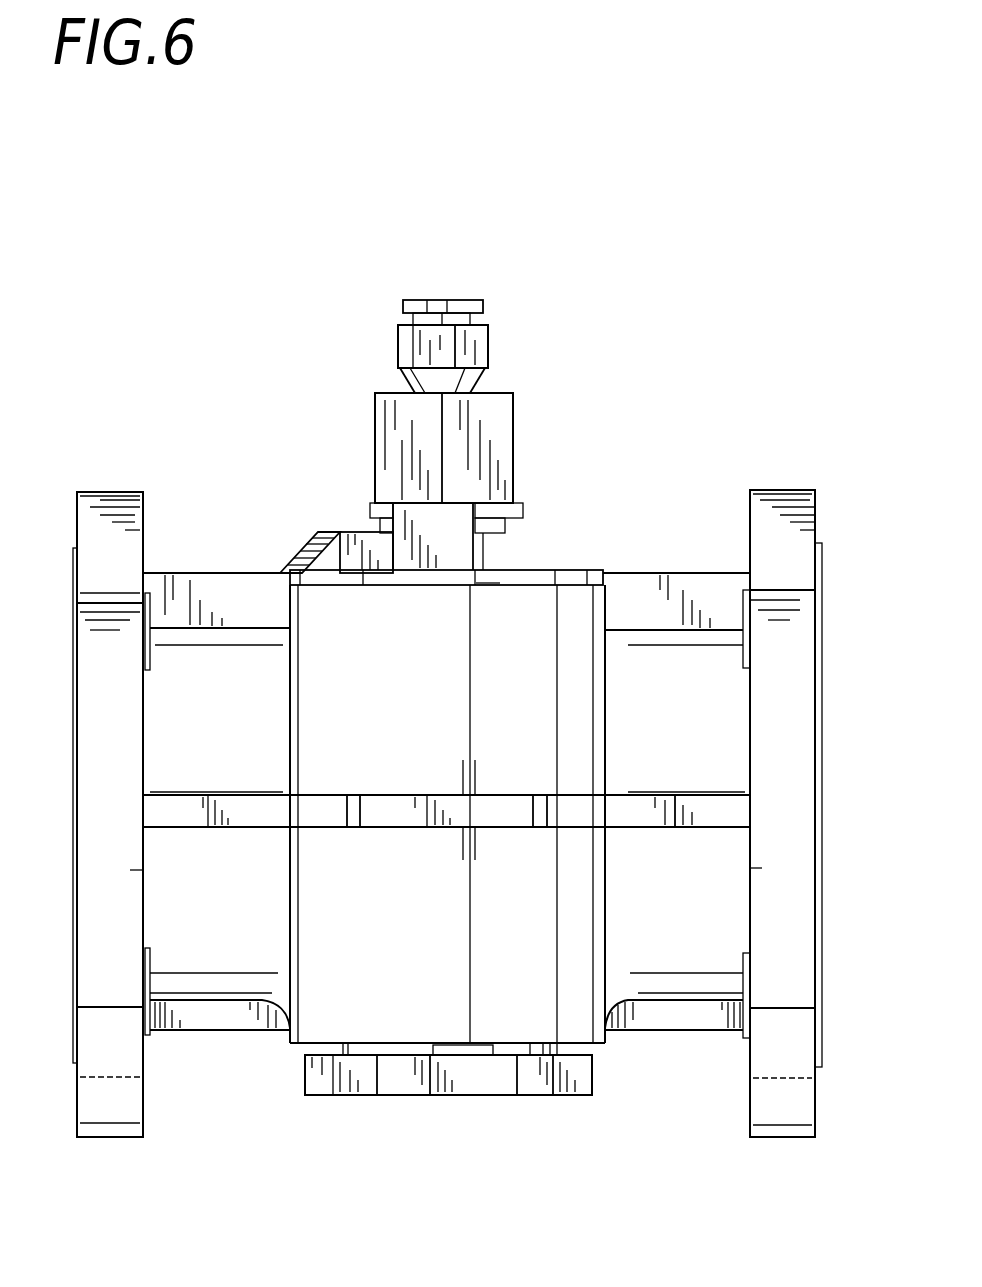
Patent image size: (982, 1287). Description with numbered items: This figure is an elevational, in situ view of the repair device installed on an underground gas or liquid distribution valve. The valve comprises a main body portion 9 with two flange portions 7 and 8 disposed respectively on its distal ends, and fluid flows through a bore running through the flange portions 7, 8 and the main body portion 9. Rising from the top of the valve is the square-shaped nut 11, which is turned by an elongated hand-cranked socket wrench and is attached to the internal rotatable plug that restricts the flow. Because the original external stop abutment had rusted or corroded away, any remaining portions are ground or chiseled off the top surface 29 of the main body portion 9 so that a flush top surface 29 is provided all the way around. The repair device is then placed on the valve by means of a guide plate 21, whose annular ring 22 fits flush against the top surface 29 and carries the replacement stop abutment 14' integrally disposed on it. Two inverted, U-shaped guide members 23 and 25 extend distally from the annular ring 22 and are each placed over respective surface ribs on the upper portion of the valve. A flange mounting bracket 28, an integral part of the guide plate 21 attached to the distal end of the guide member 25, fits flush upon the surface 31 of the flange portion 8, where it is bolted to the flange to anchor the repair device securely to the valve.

The flange portion 7 is at (810, 512).
The flange portion 8 is at (90, 535).
The main body portion 9 is at (445, 689).
The square-shaped nut 11 is at (503, 452).
The replacement stop abutment 14' is at (331, 509).
The guide plate 21 is at (530, 570).
The annular ring 22 is at (568, 577).
The inverted U-shaped guide member 23 is at (677, 585).
The inverted U-shaped guide member 25 is at (258, 577).
The flange mounting bracket 28 is at (157, 620).
The top surface 29 is at (488, 592).
The surface of flange portion 31 is at (143, 518).